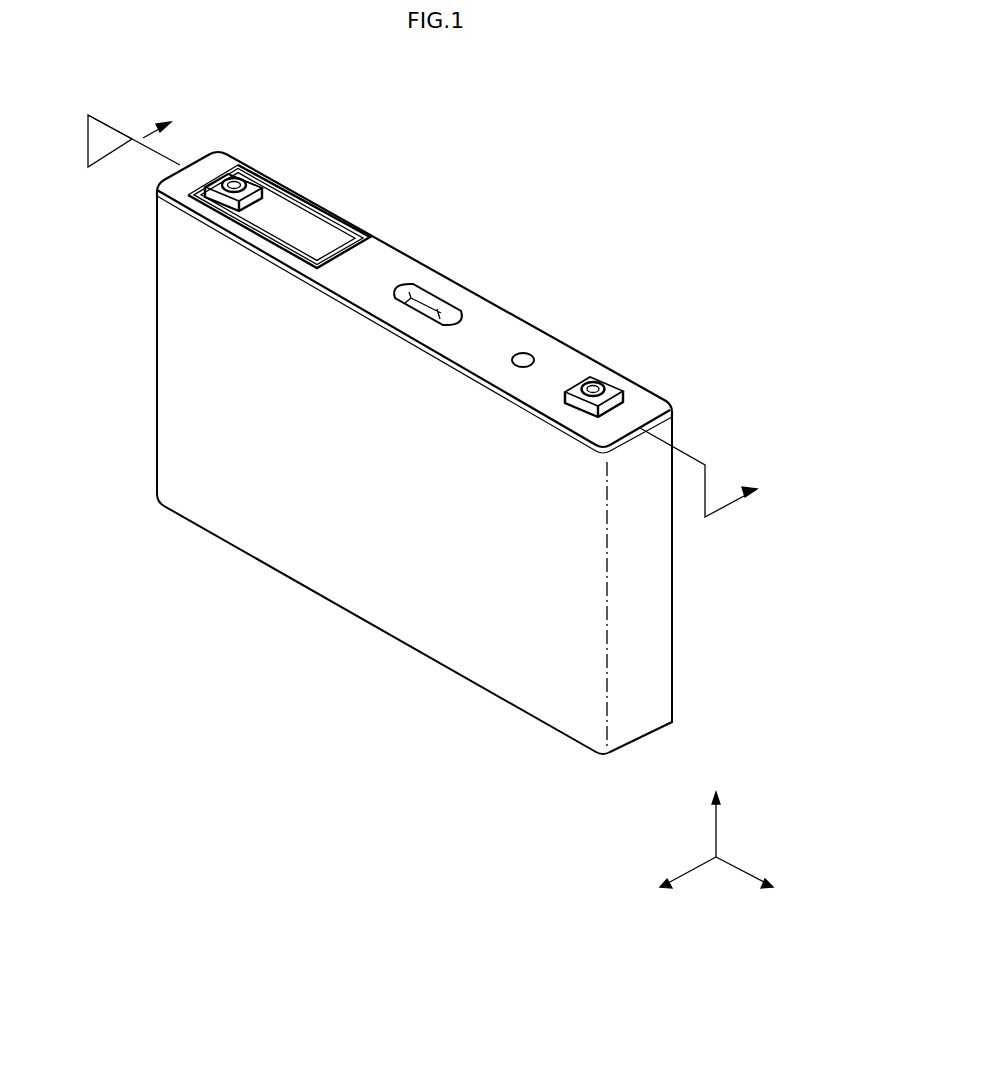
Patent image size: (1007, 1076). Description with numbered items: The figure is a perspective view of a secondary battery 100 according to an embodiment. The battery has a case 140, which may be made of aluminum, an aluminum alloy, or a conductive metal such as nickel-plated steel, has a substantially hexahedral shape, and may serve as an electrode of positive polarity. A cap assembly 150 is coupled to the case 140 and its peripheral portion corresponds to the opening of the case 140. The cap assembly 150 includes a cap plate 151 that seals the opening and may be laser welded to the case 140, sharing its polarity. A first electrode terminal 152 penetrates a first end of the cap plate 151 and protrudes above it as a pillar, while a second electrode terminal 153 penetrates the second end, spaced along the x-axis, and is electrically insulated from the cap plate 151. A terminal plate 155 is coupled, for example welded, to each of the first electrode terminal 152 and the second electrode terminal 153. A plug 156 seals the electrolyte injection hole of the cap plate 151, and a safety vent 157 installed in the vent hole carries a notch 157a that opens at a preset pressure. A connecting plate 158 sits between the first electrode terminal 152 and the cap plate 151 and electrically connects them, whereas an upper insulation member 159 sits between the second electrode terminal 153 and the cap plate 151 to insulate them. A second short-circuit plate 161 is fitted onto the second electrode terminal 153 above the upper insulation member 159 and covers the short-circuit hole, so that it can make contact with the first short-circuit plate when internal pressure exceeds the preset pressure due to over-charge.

The secondary battery 100 is at (460, 131).
The case 140 is at (363, 598).
The cap assembly 150 is at (414, 302).
The cap plate 151 is at (397, 260).
The first electrode terminal 152 is at (593, 378).
The second electrode terminal 153 is at (235, 178).
The terminal plate 155 is at (257, 186).
The plug 156 is at (523, 356).
The safety vent 157 is at (430, 290).
The notch 157a is at (443, 300).
The connecting plate 158 is at (627, 402).
The upper insulation member 159 is at (338, 218).
The second short-circuit plate 161 is at (300, 227).